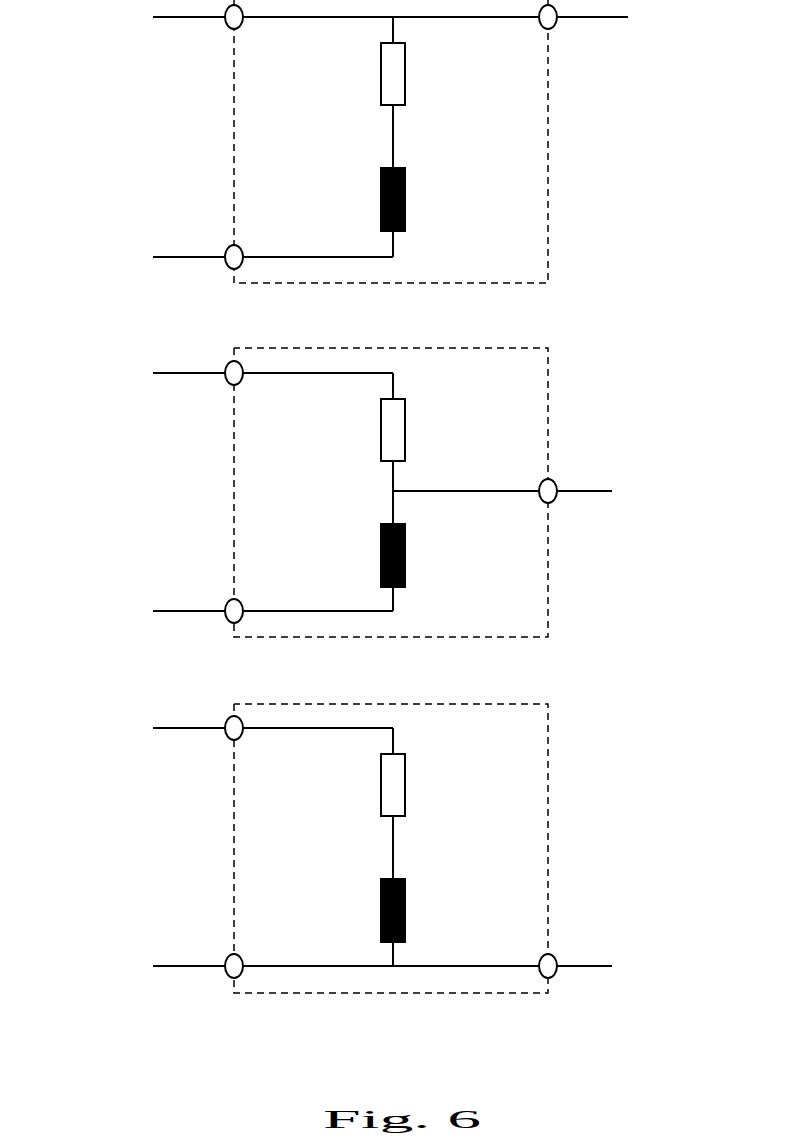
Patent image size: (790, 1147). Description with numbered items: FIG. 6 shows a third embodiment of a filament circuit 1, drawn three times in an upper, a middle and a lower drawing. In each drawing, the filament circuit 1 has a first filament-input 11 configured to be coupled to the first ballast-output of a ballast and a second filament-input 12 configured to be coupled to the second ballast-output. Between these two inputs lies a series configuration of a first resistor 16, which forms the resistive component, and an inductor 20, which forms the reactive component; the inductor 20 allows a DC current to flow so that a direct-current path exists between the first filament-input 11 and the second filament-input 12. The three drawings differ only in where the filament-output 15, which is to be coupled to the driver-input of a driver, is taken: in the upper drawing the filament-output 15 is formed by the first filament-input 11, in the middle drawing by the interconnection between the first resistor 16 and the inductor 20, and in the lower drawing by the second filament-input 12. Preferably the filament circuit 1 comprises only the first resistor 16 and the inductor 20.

The filament circuit 1 is at (498, 283).
The first filament-input 11 is at (229, 27).
The second filament-input 12 is at (228, 247).
The filament-output 15 is at (554, 27).
The first resistor 16 is at (405, 74).
The inductor 20 is at (405, 199).